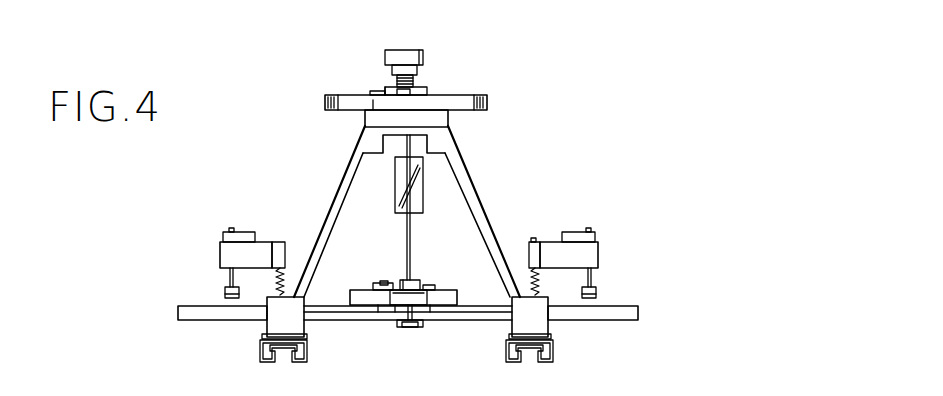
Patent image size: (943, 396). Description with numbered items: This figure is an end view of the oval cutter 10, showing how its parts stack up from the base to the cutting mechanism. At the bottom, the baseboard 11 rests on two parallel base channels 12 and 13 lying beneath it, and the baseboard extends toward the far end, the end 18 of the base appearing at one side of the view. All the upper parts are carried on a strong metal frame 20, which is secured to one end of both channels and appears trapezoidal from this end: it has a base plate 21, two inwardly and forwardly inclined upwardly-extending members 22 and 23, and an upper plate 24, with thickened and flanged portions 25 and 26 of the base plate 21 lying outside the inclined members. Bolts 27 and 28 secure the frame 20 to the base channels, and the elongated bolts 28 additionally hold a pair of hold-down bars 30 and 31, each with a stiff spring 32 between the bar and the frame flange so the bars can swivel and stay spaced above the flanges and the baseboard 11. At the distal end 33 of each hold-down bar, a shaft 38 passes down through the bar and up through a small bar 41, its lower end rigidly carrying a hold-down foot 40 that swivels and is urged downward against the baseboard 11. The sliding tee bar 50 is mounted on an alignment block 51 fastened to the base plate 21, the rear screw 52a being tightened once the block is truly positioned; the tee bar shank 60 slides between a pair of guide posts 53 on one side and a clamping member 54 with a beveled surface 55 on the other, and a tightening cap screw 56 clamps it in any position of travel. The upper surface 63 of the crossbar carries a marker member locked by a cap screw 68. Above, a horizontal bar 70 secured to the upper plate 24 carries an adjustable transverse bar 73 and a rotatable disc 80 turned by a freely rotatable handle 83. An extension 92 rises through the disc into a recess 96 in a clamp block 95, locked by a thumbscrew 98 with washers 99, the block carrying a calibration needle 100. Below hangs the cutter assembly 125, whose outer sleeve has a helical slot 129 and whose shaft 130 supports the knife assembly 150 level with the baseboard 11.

The oval cutter 10 is at (547, 124).
The baseboard 11 is at (206, 313).
The base channel 12 is at (552, 350).
The base channel 13 is at (262, 343).
The right base beam 18 is at (632, 315).
The frame 20 is at (419, 211).
The base plate 21 is at (340, 315).
The upwardly-extending member 22 is at (471, 189).
The upwardly-extending member 23 is at (343, 186).
The upper plate 24 is at (378, 128).
The thickened and flanged portion 25 is at (543, 324).
The thickened and flanged portion 26 is at (298, 324).
The bolt 27 is at (280, 281).
The bolt 28 is at (277, 242).
The hold-down bar 30 is at (555, 236).
The hold-down bar 31 is at (238, 251).
The spring 32 is at (247, 284).
The distal end 33 is at (228, 253).
The shaft 38 is at (223, 279).
The hold-down foot 40 is at (225, 297).
The small bar 41 is at (242, 233).
The sliding tee bar 50 is at (430, 306).
The alignment block 51 is at (378, 307).
The rear screw 52a is at (394, 322).
The guide post 53 is at (434, 291).
The clamping member 54 is at (380, 287).
The beveled surface 55 is at (394, 308).
The tightening cap screw 56 is at (389, 286).
The shank 60 is at (421, 299).
The upper surface 63 is at (352, 292).
The cap screw 68 is at (401, 288).
The horizontal bar 70 is at (443, 116).
The transverse bar 73 is at (372, 101).
The rotatable disc 80 is at (481, 102).
The handle 83 is at (400, 55).
The extension 92 is at (440, 90).
The clamp block 95 is at (386, 85).
The recess 96 is at (385, 86).
The thumbscrew 98 is at (415, 70).
The washer 99 is at (416, 81).
The calibration needle 100 is at (372, 92).
The cutter assembly 125 is at (423, 200).
The helical slot 129 is at (395, 200).
The shaft 130 is at (412, 241).
The knife assembly 150 is at (424, 272).